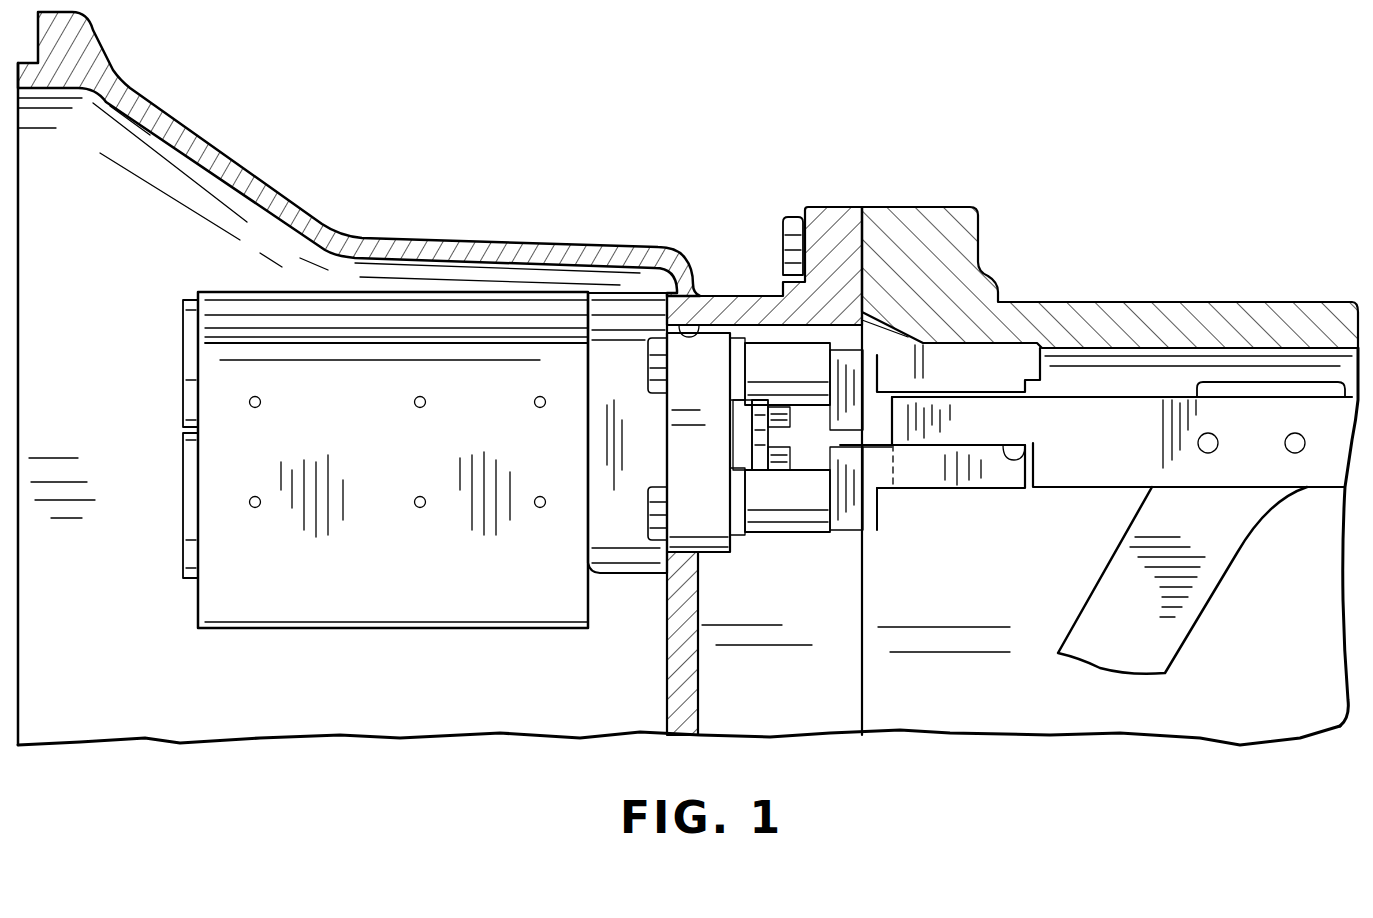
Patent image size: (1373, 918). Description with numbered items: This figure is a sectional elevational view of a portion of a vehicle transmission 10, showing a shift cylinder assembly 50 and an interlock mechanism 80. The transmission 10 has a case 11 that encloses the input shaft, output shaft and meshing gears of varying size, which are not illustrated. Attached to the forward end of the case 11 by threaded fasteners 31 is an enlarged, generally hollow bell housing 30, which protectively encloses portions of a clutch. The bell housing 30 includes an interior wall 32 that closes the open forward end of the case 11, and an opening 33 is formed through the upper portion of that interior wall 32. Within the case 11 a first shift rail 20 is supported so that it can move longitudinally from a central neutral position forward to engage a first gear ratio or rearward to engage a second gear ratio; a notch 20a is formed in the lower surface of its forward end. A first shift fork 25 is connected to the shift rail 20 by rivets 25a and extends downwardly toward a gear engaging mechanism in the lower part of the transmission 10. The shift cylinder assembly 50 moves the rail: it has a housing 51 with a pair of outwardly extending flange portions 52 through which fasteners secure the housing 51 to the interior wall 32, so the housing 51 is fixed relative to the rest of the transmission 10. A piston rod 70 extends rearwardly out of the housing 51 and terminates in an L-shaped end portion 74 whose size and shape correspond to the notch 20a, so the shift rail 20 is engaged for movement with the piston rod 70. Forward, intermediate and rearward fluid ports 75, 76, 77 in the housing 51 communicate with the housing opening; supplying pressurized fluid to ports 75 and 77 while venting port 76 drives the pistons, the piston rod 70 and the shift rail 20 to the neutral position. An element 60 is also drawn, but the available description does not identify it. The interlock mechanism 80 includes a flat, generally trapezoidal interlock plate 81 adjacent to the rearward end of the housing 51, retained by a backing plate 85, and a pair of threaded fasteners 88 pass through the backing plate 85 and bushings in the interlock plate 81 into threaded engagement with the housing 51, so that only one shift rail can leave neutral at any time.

The vehicle transmission 10 is at (1232, 189).
The transmission case 11 is at (1075, 316).
The first shift rail 20 is at (1107, 488).
The notch 20a is at (1033, 453).
The first shift fork 25 is at (1183, 616).
The rivets 25a is at (1290, 452).
The bell housing 30 is at (224, 167).
The threaded fasteners 31 is at (790, 220).
The interior wall 32 is at (677, 650).
The opening 33 is at (690, 336).
The shift cylinder assembly 50 is at (208, 264).
The housing 51 is at (430, 615).
The flange portions 52 is at (620, 435).
The tabs 60 is at (186, 376).
The piston rod 70 is at (780, 348).
The L-shaped end portion 74 is at (876, 356).
The forward fluid port 75 is at (261, 400).
The intermediate fluid port 76 is at (425, 407).
The rearward fluid port 77 is at (535, 406).
The interlock mechanism 80 is at (824, 558).
The interlock plate 81 is at (742, 432).
The backing plate 85 is at (762, 540).
The threaded fasteners 88 is at (790, 458).